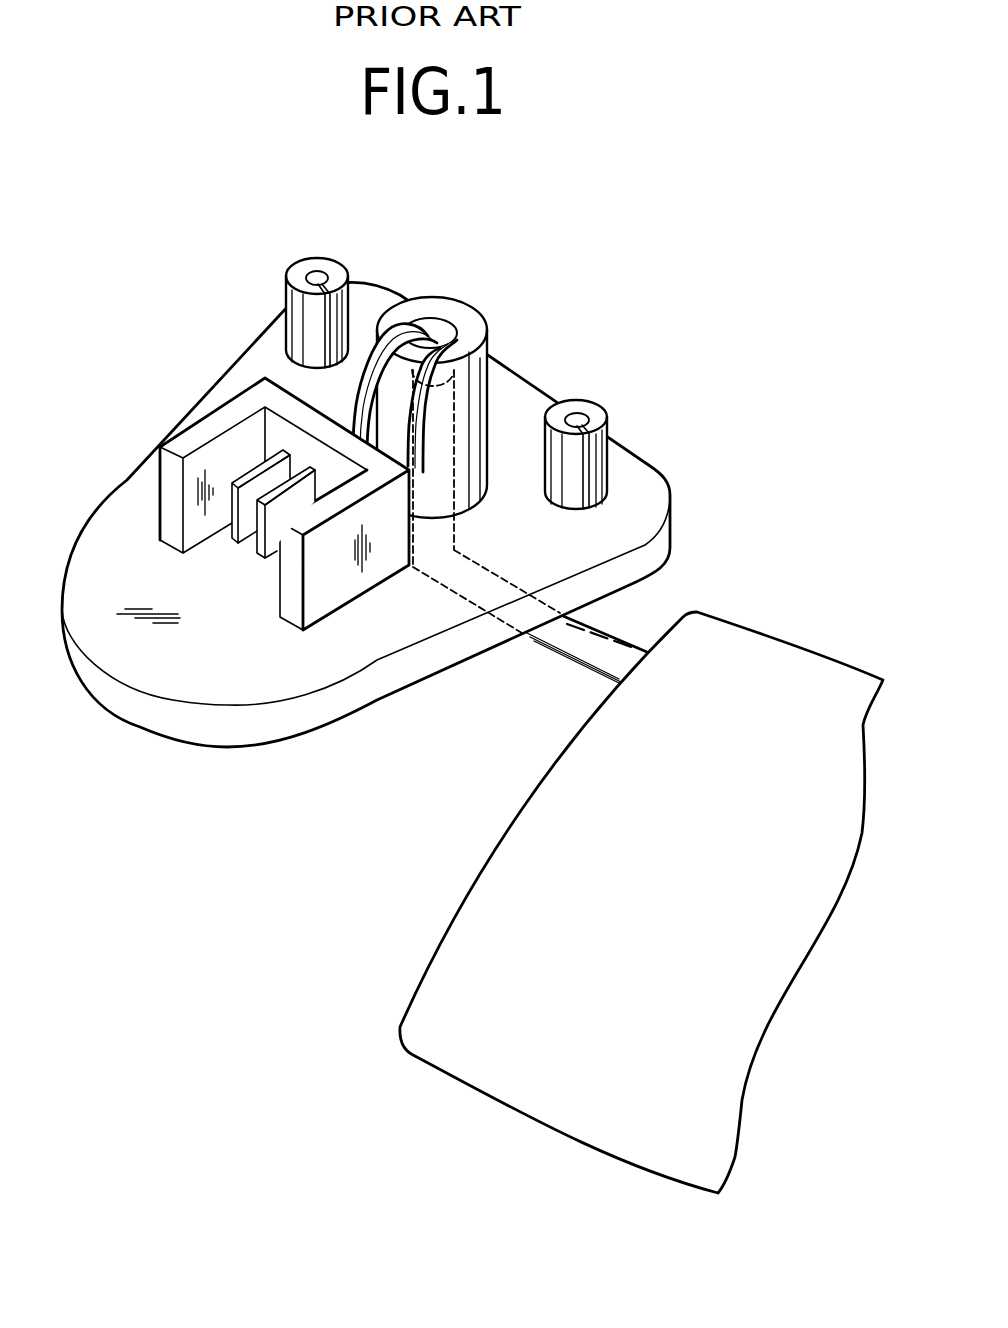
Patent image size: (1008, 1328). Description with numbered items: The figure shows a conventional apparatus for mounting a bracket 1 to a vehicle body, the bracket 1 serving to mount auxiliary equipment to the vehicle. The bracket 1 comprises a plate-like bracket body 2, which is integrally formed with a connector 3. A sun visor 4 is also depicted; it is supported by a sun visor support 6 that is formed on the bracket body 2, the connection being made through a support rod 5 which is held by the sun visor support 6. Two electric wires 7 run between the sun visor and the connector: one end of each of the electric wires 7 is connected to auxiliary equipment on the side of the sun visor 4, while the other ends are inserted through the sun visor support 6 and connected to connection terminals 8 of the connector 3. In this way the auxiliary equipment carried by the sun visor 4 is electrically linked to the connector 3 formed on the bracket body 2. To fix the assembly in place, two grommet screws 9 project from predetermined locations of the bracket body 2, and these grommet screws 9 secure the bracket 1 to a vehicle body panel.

The bracket 1 is at (380, 469).
The bracket body 2 is at (645, 465).
The connector 3 is at (230, 397).
The sun visor 4 is at (813, 622).
The support rod 5 is at (614, 636).
The sun visor support 6 is at (472, 318).
The electric wires 7 is at (438, 340).
The connection terminals 8 is at (256, 553).
The grommet screws 9 is at (327, 260).